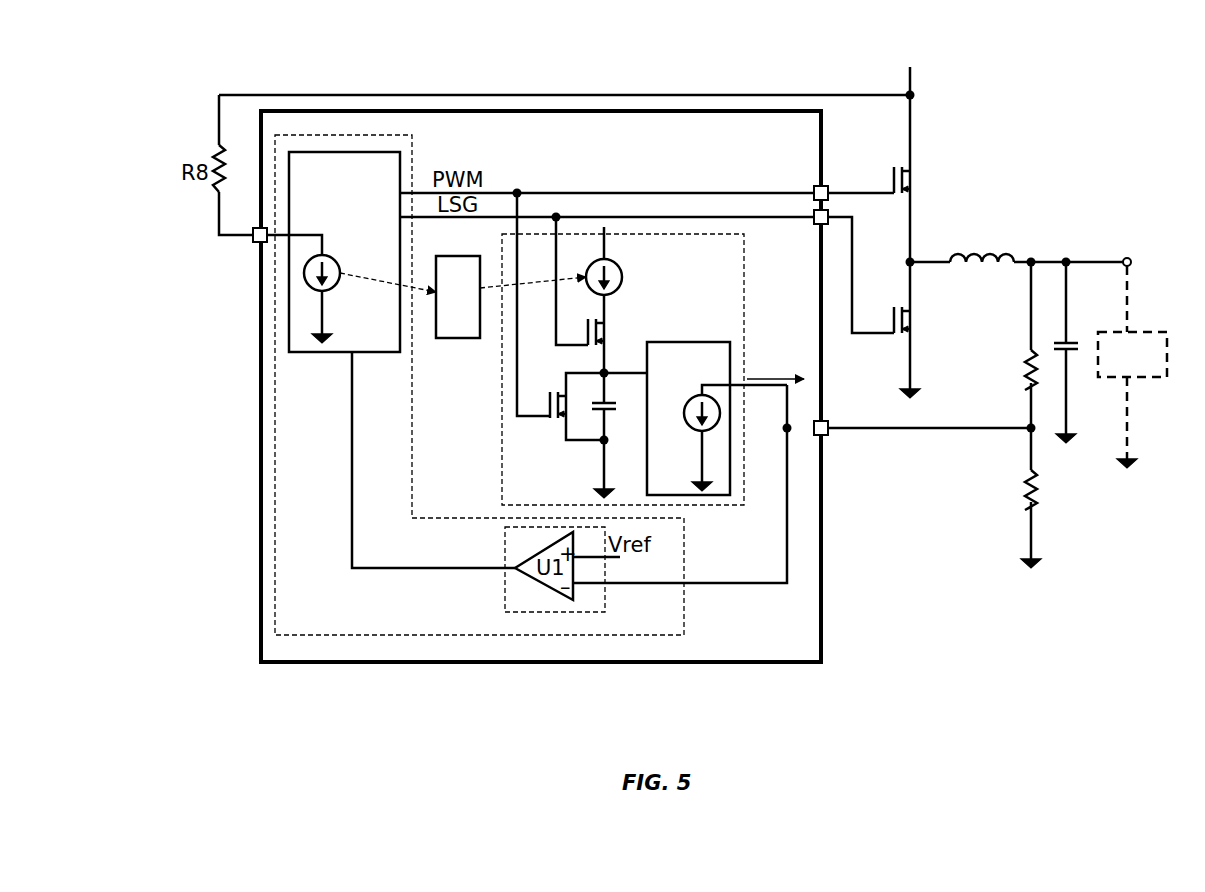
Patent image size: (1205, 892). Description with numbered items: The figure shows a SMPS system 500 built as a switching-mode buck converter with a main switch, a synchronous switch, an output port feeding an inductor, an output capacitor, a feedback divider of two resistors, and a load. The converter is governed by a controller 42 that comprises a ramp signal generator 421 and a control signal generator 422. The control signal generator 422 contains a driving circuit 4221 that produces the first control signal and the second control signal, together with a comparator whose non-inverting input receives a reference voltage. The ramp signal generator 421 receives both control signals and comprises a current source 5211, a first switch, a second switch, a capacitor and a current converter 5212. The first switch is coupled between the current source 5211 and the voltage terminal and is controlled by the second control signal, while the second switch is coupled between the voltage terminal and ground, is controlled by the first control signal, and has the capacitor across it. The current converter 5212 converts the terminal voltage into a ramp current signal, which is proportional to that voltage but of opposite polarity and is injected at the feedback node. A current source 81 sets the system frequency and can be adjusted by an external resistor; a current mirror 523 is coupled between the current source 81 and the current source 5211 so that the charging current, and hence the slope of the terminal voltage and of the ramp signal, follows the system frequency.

The SMPS system 500 is at (1054, 66).
The controller 42 is at (822, 662).
The control signal generator 422 is at (330, 637).
The driving circuit 4221 is at (352, 152).
The current source of system frequency 81 is at (298, 268).
The current mirror 523 is at (460, 340).
The ramp signal generator 421 is at (712, 234).
The current source 5211 is at (622, 272).
The current converter 5212 is at (672, 342).